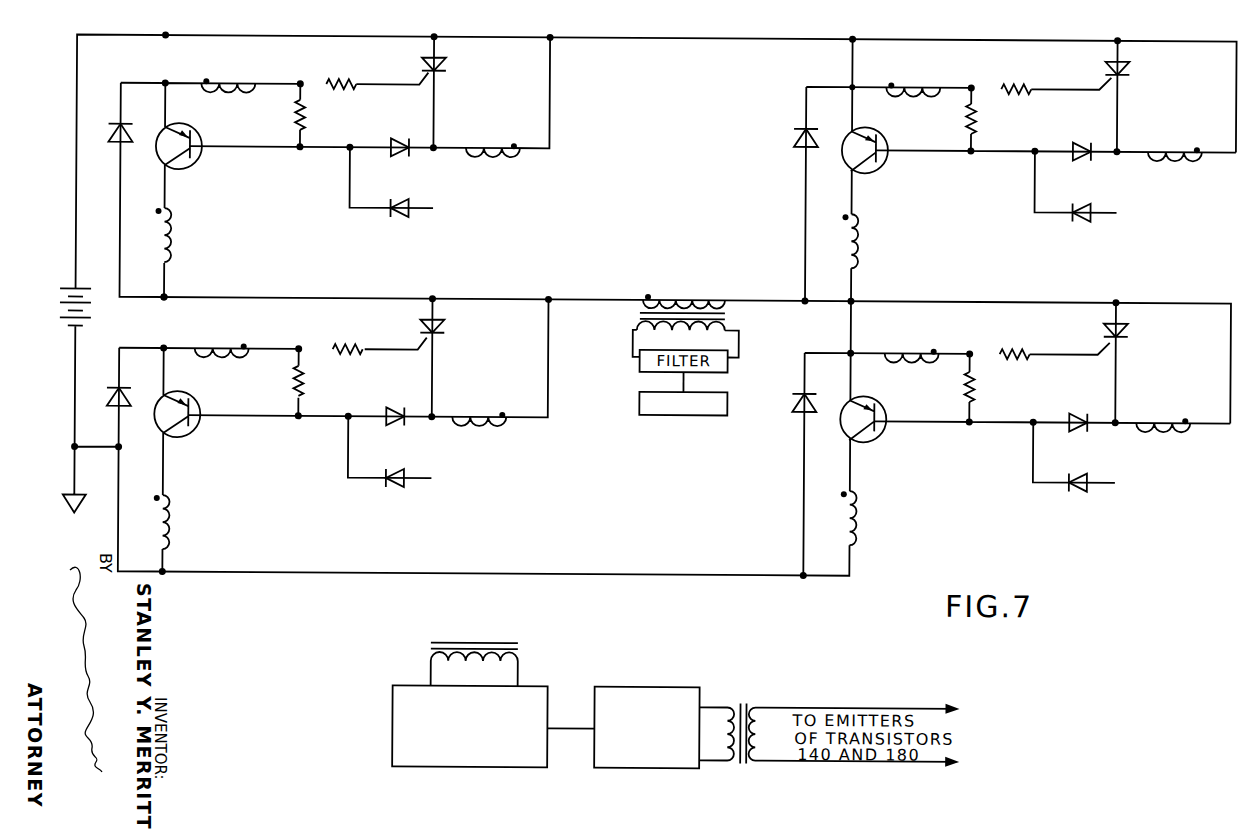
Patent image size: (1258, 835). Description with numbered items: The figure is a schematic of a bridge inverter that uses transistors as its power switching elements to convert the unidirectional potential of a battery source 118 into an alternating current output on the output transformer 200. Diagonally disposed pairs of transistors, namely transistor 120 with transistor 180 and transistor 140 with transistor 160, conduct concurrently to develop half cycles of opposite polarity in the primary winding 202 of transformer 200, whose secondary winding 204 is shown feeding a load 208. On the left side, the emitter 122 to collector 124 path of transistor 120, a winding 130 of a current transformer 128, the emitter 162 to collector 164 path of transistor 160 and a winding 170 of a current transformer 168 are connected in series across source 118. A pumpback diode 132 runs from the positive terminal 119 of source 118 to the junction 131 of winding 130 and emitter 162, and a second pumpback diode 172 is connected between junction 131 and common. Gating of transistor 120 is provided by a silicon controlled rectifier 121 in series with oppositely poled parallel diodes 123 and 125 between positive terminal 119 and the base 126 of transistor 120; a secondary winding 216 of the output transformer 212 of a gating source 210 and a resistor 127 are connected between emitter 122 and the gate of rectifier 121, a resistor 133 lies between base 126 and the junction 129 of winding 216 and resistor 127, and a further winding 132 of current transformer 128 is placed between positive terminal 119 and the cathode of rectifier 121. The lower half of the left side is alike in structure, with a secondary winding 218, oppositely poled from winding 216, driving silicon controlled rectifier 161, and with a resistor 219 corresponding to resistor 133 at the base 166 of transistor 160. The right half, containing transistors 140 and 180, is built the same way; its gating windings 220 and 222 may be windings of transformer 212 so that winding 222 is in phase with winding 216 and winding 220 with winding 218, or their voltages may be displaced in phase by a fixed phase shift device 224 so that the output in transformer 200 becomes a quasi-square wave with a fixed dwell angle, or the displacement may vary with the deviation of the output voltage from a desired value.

The unidirectional potential source 118 is at (66, 306).
The positive terminal 119 is at (70, 290).
The transistor 120 is at (200, 150).
The silicon controlled rectifier 121 is at (445, 72).
The emitter 122 is at (170, 137).
The diode 123 is at (413, 120).
The collector 124 is at (176, 174).
The diode 125 is at (402, 199).
The base 126 is at (197, 142).
The resistor 127 is at (330, 84).
The current transformer 128 is at (220, 243).
The junction 129 is at (320, 64).
The winding 130 is at (162, 232).
The junction 131 is at (168, 299).
The pumpback diode 132 is at (121, 142).
The resistor 133 is at (305, 118).
The transistor 140 is at (882, 170).
The transistor 160 is at (199, 419).
The silicon controlled rectifier 161 is at (446, 330).
The emitter 162 is at (170, 404).
The collector 164 is at (175, 442).
The base 166 is at (198, 413).
The current transformer 168 is at (224, 529).
The winding 170 is at (163, 518).
The pumpback diode 172 is at (116, 399).
The transistor 180 is at (883, 434).
The output transformer 200 is at (775, 328).
The primary winding 202 is at (678, 296).
The secondary winding 204 is at (637, 331).
The load 208 is at (655, 416).
The gating source 210 is at (532, 688).
The output transformer of gating source 212 is at (522, 668).
The secondary winding 216 is at (242, 82).
The secondary winding 218 is at (207, 351).
The resistor 219 is at (304, 384).
The winding 220 is at (899, 83).
The winding 222 is at (899, 355).
The fixed phase shift device 224 is at (629, 688).